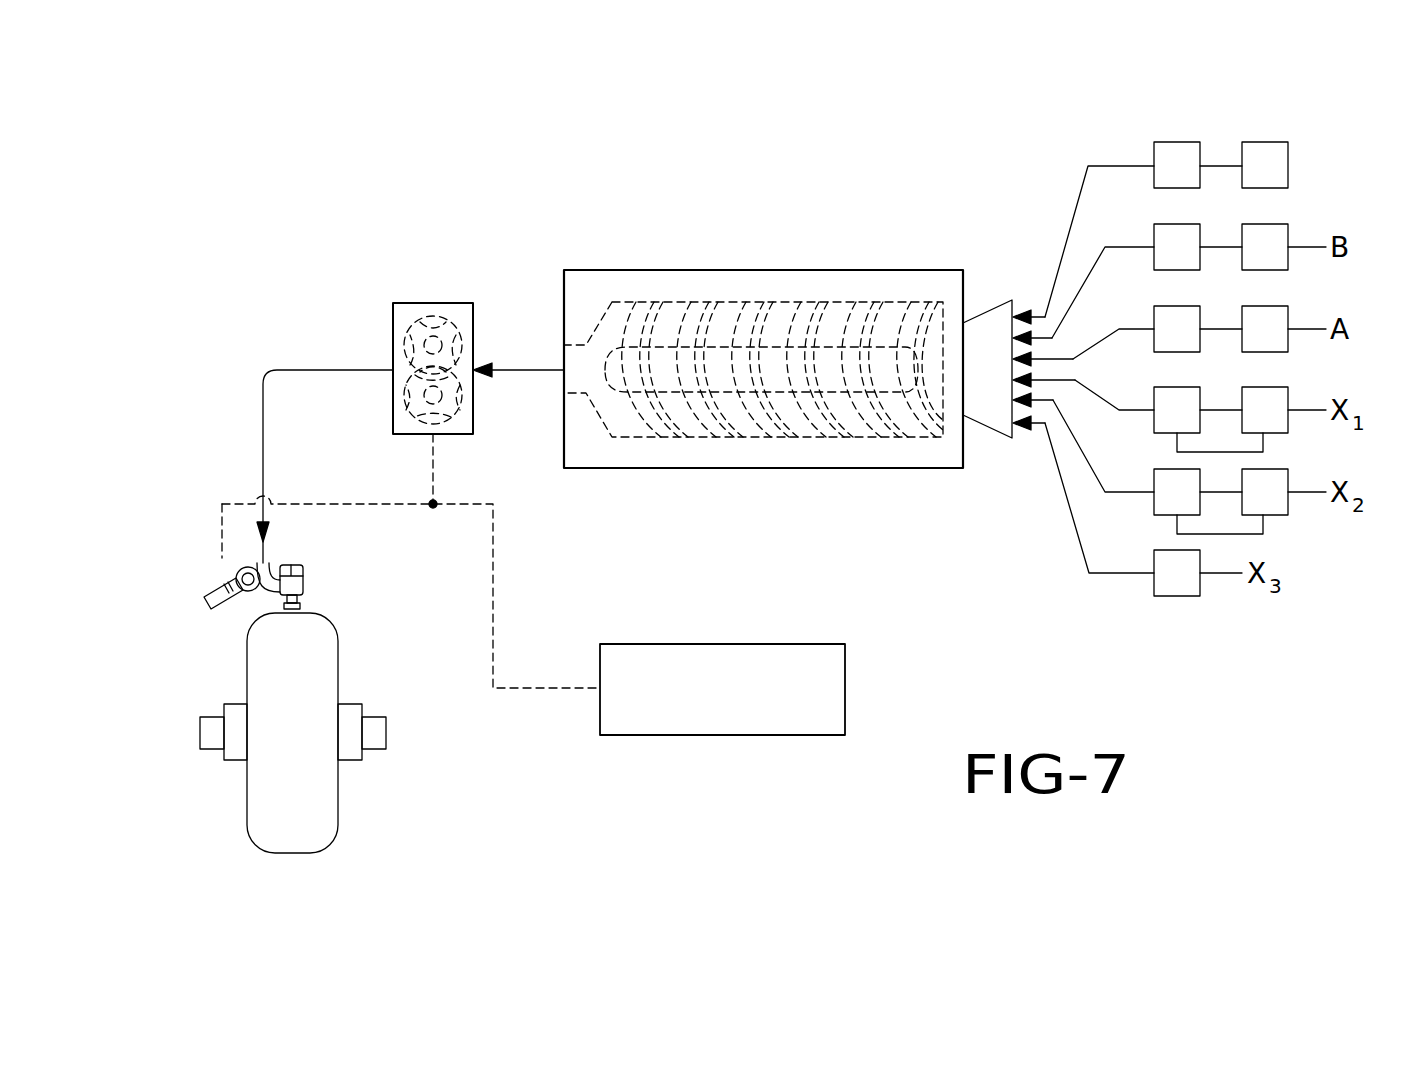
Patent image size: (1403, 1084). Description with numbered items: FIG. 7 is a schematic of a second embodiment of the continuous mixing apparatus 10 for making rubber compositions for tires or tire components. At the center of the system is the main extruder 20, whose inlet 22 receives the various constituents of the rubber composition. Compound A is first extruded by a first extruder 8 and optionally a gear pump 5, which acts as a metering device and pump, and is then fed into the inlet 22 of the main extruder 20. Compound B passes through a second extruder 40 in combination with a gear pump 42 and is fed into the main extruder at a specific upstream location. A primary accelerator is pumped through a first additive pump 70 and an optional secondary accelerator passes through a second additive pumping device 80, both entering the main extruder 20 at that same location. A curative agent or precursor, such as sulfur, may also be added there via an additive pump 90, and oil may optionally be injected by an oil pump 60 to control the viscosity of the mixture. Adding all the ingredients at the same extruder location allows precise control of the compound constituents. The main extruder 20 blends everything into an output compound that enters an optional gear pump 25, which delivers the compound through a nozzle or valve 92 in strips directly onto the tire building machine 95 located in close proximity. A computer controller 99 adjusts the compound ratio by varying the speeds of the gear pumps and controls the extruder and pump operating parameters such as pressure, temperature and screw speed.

The continuous mixing apparatus 10 is at (184, 380).
The main extruder 20 is at (810, 270).
The inlet 22 is at (998, 305).
The gear pump 25 is at (430, 303).
The valve 92 is at (303, 572).
The tire building machine 95 is at (232, 762).
The computer controller 99 is at (633, 644).
The additive pump 90 is at (1172, 142).
The gear pump 42 is at (1166, 224).
The second extruder 40 is at (1268, 224).
The gear pump 5 is at (1166, 306).
The first extruder 8 is at (1268, 306).
The first additive pump 70 is at (1265, 440).
The second additive pumping device 80 is at (1265, 522).
The oil pump 60 is at (1180, 596).